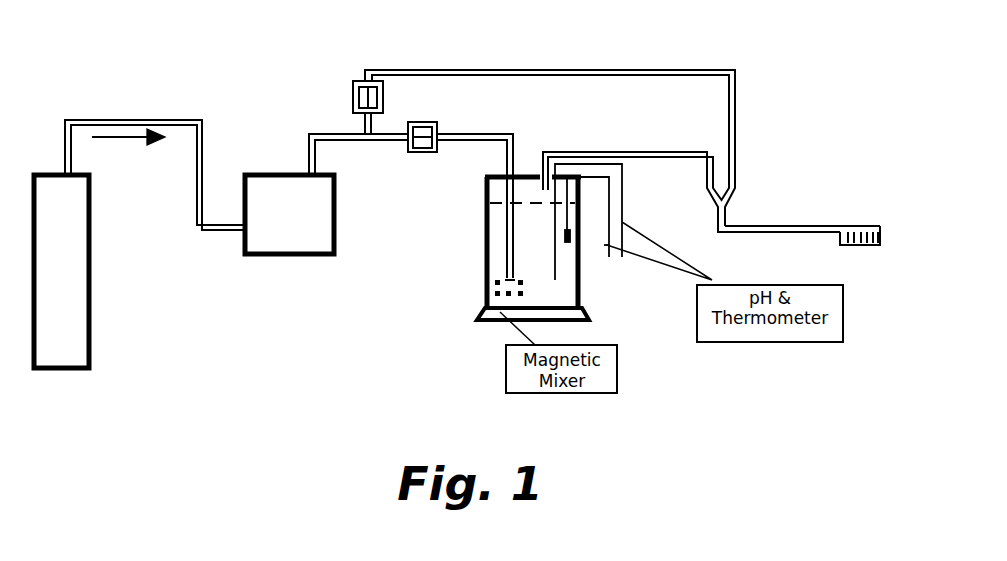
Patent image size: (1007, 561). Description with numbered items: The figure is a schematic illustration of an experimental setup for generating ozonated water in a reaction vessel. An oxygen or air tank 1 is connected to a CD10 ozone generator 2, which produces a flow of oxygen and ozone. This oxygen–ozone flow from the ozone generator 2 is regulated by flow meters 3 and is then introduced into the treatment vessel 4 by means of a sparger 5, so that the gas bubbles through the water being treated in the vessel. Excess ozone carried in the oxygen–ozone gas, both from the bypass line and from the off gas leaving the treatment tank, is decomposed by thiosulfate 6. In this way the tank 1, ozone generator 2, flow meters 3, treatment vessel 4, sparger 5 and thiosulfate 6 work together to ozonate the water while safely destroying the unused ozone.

The oxygen or air tank 1 is at (61, 271).
The ozone generator 2 is at (289, 214).
The flow meters 3 is at (407, 138).
The treatment vessel 4 is at (562, 293).
The sparger 5 is at (495, 287).
The thiosulfate 6 is at (870, 245).